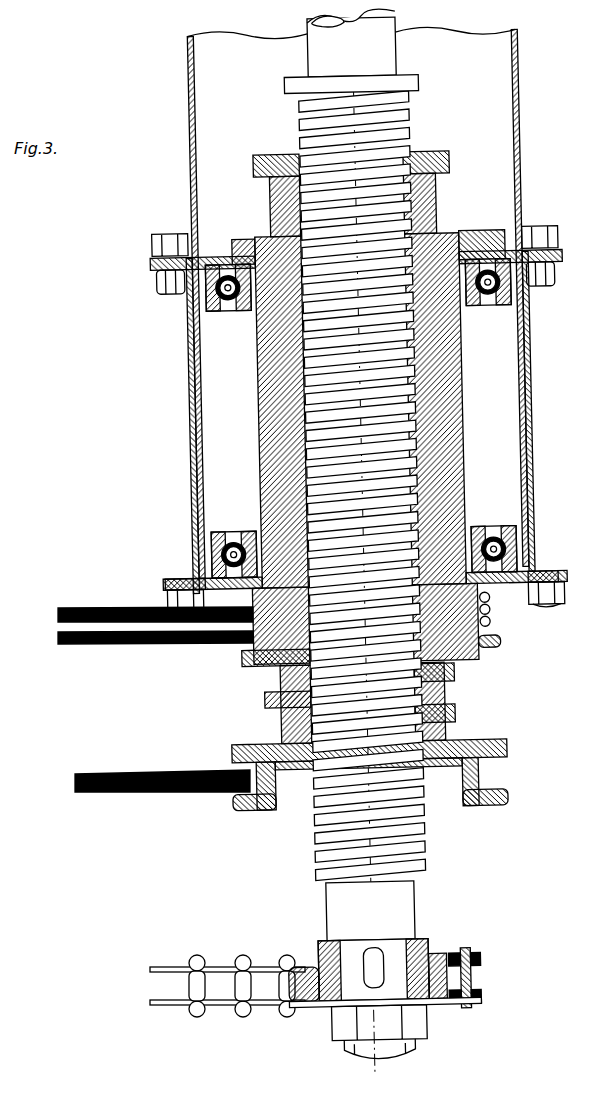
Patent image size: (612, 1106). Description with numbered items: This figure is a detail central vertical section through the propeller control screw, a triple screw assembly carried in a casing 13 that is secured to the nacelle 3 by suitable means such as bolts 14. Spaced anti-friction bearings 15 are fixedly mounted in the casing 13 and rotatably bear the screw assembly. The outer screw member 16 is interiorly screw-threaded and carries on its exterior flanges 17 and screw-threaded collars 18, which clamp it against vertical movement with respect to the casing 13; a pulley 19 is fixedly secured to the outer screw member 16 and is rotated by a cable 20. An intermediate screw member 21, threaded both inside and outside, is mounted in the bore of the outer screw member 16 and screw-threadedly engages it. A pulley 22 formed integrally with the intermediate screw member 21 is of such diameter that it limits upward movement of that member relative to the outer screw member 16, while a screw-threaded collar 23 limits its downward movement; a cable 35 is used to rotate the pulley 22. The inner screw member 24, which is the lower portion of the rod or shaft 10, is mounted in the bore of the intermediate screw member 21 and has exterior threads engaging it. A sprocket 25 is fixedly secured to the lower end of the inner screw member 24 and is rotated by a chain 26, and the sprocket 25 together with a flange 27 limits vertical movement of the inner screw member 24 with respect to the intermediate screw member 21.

The nacelle 3 is at (145, 578).
The rod or shaft 10 is at (385, 50).
The casing 13 is at (183, 337).
The bolts 14 is at (540, 281).
The anti-friction bearings 15 is at (182, 288).
The outer screw member 16 is at (512, 433).
The flanges 17 is at (244, 316).
The screw-threaded collars 18 is at (463, 235).
The pulley 19 is at (488, 645).
The cable 20 is at (180, 640).
The intermediate screw member 21 is at (441, 715).
The pulley 22 is at (492, 748).
The screw-threaded collar 23 is at (265, 155).
The inner screw member 24 is at (410, 870).
The sprocket 25 is at (414, 946).
The chain 26 is at (231, 1012).
The flange 27 is at (418, 81).
The cable 35 is at (192, 791).